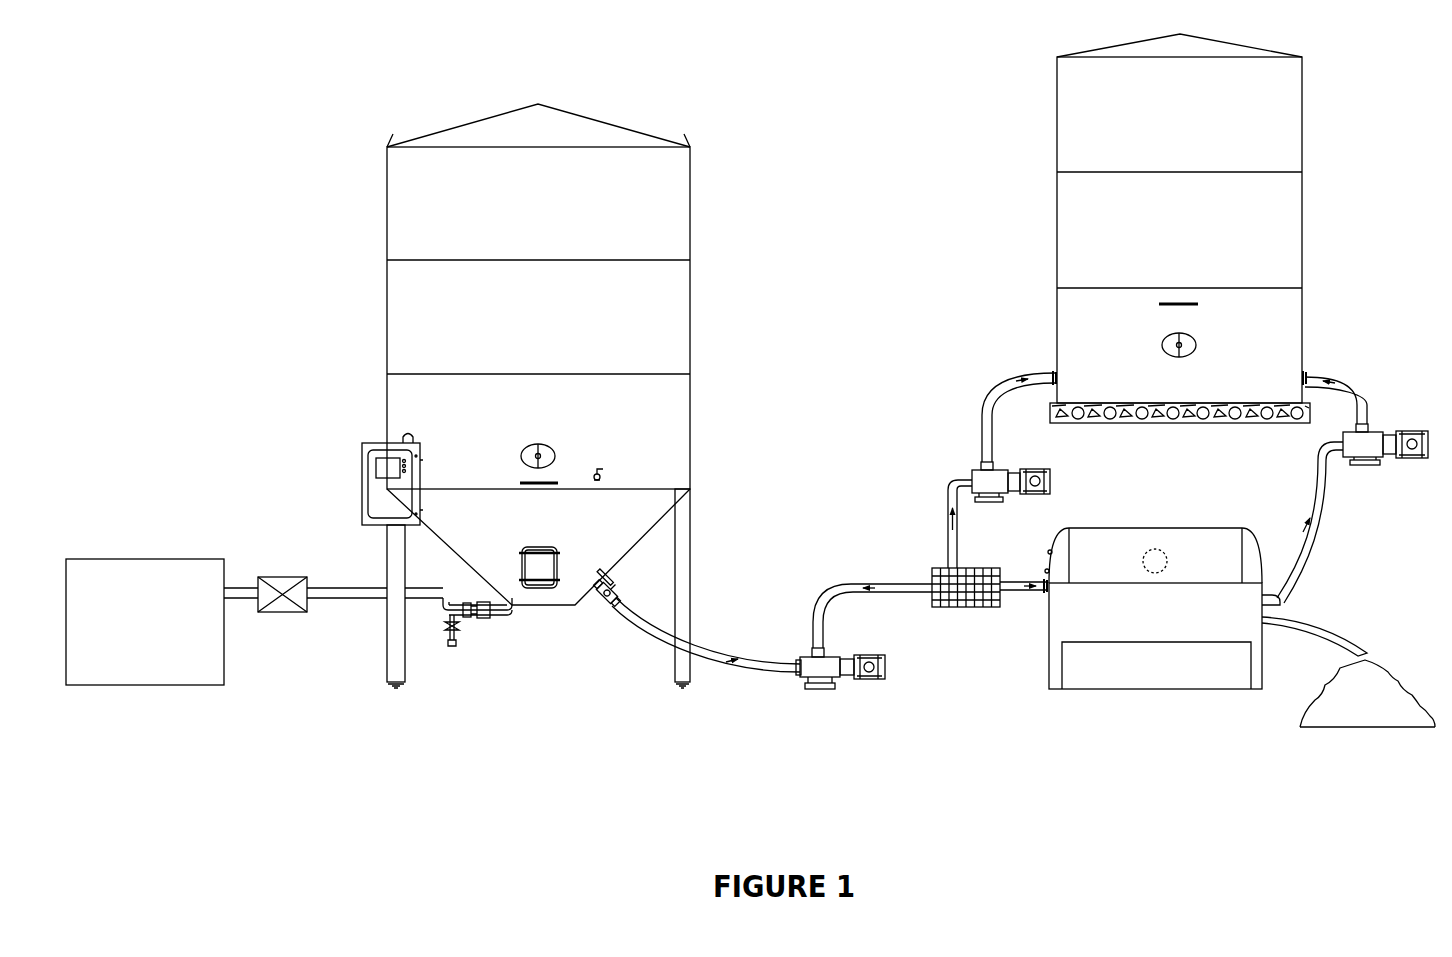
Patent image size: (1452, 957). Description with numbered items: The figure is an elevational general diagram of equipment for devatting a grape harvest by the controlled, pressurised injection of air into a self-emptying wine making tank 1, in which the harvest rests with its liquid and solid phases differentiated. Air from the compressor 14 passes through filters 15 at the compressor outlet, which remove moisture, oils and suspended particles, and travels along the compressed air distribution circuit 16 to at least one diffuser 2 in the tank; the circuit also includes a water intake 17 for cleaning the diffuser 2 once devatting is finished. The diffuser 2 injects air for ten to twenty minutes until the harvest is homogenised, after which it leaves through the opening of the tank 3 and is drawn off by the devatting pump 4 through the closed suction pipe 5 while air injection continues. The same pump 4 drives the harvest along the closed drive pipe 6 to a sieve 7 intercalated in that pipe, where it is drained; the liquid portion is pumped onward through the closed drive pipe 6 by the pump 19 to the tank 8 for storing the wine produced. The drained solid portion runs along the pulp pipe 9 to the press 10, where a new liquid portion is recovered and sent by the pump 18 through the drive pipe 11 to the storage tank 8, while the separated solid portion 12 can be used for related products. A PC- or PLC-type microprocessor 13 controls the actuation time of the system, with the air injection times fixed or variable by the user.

The wine making tank 1 is at (695, 401).
The diffuser 2 is at (483, 625).
The opening of the tank 3 is at (614, 595).
The devatting pump 4 is at (873, 679).
The closed suction pipe 5 is at (734, 669).
The closed drive pipe 6 is at (861, 607).
The sieve 7 is at (934, 566).
The tank for storing the wine 8 is at (1050, 216).
The pulp pipe 9 is at (1024, 598).
The press 10 is at (1223, 527).
The drive pipe 11 is at (1333, 503).
The solid portion 12 is at (1396, 665).
The microprocessor 13 is at (383, 442).
The compressor 14 is at (153, 558).
The filters 15 is at (290, 575).
The compressed air distribution circuit 16 is at (373, 584).
The water intake 17 is at (447, 633).
The pump 18 is at (1393, 432).
The pump 19 is at (1016, 495).